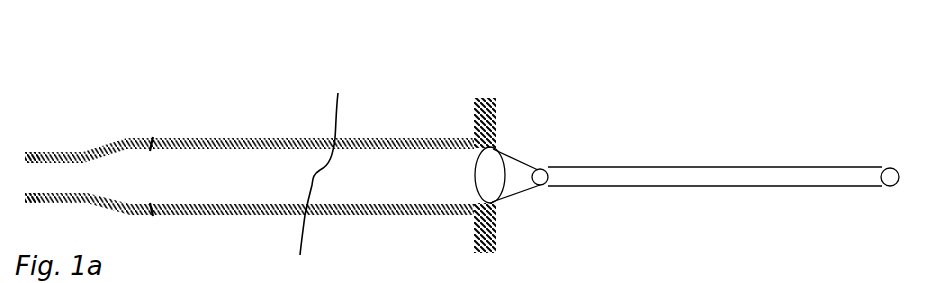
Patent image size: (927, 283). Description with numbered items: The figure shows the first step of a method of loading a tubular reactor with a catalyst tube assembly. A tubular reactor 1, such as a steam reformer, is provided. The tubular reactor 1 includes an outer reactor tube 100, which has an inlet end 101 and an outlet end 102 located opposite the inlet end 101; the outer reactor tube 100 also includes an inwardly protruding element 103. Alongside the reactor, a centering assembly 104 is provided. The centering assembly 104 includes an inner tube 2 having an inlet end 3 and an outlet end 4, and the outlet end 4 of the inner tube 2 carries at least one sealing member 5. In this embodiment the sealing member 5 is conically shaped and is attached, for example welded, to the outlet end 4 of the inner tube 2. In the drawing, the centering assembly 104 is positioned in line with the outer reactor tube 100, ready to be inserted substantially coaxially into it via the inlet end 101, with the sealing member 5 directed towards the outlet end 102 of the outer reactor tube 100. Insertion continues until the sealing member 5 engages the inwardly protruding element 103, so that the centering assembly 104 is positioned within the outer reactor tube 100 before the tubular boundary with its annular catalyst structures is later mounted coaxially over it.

The tubular reactor 1 is at (414, 77).
The inner tube 2 is at (722, 167).
The inlet end 3 is at (890, 187).
The outlet end 4 is at (540, 186).
The sealing member 5 is at (515, 153).
The outer reactor tube 100 is at (266, 138).
The inlet end 101 is at (496, 105).
The outlet end 102 is at (26, 157).
The inwardly protruding element 103 is at (153, 138).
The centering assembly 104 is at (666, 136).